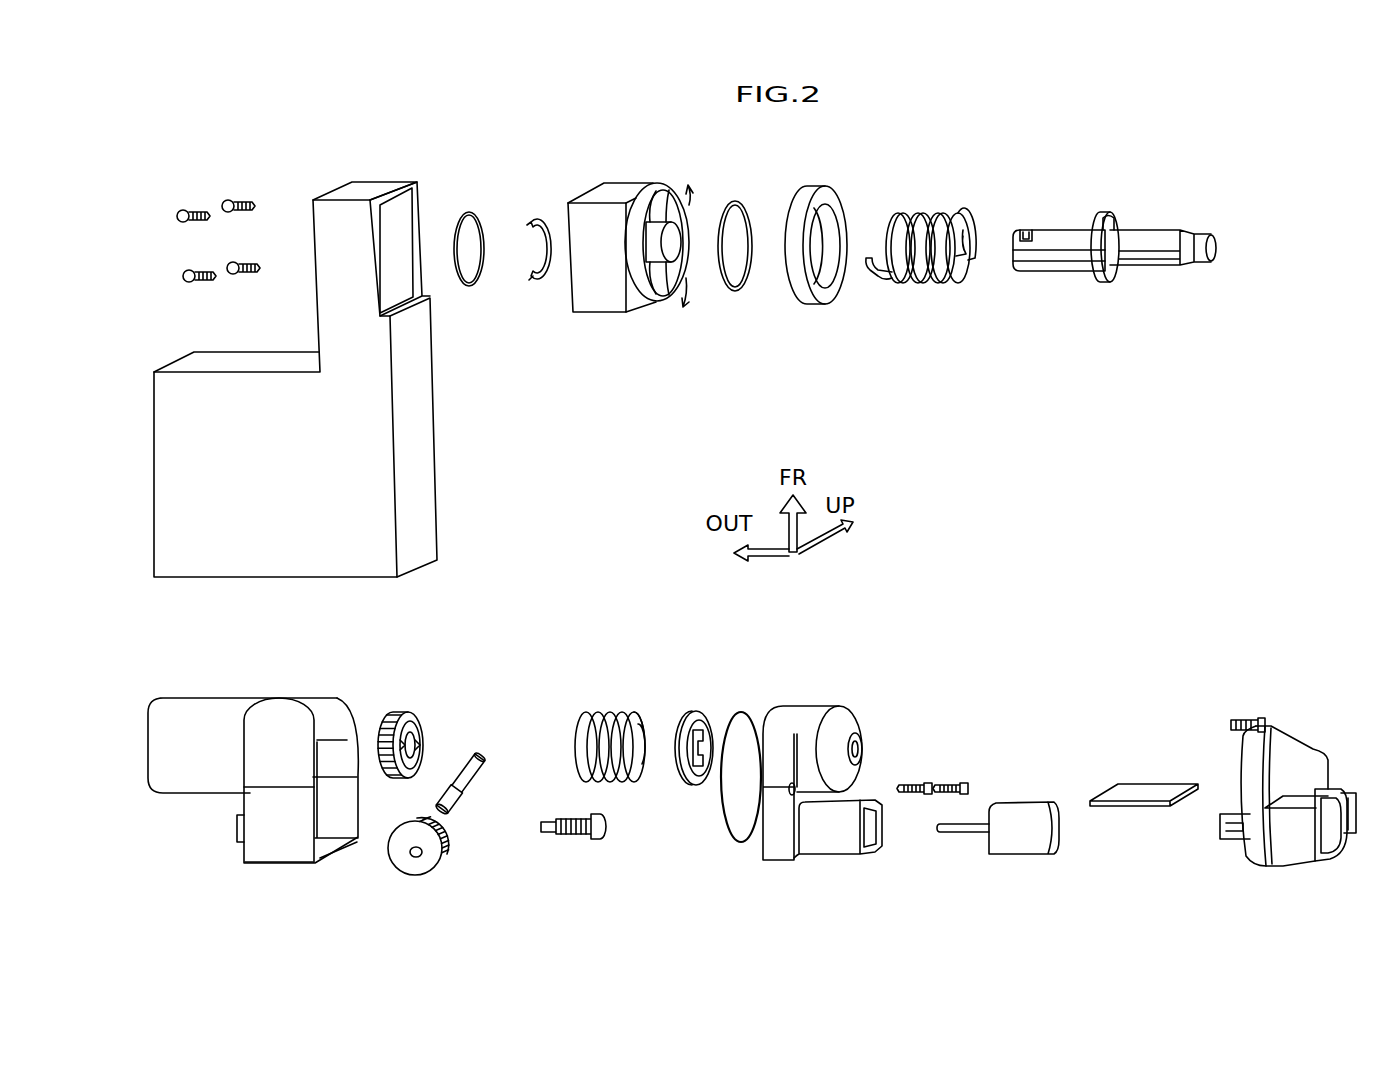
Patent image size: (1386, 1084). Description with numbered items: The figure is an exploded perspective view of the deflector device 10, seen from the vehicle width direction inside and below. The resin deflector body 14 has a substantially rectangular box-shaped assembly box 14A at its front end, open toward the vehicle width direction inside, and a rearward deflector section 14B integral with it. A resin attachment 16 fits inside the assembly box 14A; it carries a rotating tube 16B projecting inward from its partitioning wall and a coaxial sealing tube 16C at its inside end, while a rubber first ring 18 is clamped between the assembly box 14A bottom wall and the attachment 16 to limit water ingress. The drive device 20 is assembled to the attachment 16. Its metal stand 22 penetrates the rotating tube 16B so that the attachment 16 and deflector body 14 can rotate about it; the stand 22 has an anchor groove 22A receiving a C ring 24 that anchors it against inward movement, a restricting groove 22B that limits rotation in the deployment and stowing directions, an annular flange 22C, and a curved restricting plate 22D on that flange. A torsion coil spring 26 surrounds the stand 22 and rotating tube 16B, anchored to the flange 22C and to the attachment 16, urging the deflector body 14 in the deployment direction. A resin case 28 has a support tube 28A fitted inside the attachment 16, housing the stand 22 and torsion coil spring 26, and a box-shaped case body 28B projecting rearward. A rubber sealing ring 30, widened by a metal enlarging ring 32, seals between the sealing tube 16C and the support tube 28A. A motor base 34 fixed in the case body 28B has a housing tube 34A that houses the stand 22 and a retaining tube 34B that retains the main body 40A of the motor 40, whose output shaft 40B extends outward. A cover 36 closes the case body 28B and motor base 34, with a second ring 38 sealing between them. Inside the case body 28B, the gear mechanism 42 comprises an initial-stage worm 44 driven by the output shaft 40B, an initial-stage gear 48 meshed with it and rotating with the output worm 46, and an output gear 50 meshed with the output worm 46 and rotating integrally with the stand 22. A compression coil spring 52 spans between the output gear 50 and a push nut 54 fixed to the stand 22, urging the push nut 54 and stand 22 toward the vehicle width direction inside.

The deflector device 10 is at (1277, 210).
The deflector body 14 is at (318, 190).
The assembly box 14A is at (379, 176).
The deflector section 14B is at (429, 456).
The attachment 16 is at (578, 190).
The rotating tube 16B is at (655, 294).
The sealing tube 16C is at (648, 175).
The first ring 18 is at (461, 204).
The drive device 20 is at (1075, 336).
The stand 22 is at (1060, 222).
The anchor groove 22A is at (1017, 222).
The restricting groove 22B is at (1027, 263).
The flange 22C is at (1104, 274).
The restricting plate 22D is at (1110, 216).
The C ring 24 is at (524, 208).
The torsion coil spring 26 is at (915, 205).
The case 28 is at (255, 689).
The support tube 28A is at (195, 689).
The case body 28B is at (270, 859).
The sealing ring 30 is at (815, 178).
The enlarging ring 32 is at (730, 194).
The motor base 34 is at (797, 697).
The housing tube 34A is at (858, 705).
The retaining tube 34B is at (834, 848).
The cover 36 is at (1305, 736).
The second ring 38 is at (734, 704).
The motor 40 is at (1021, 794).
The main body 40A is at (1016, 846).
The output shaft 40B is at (953, 824).
The gear mechanism 42 is at (469, 703).
The initial-stage worm 44 is at (568, 831).
The output worm 46 is at (459, 783).
The initial-stage gear 48 is at (417, 869).
The output gear 50 is at (385, 704).
The compression coil spring 52 is at (600, 704).
The push nut 54 is at (684, 703).